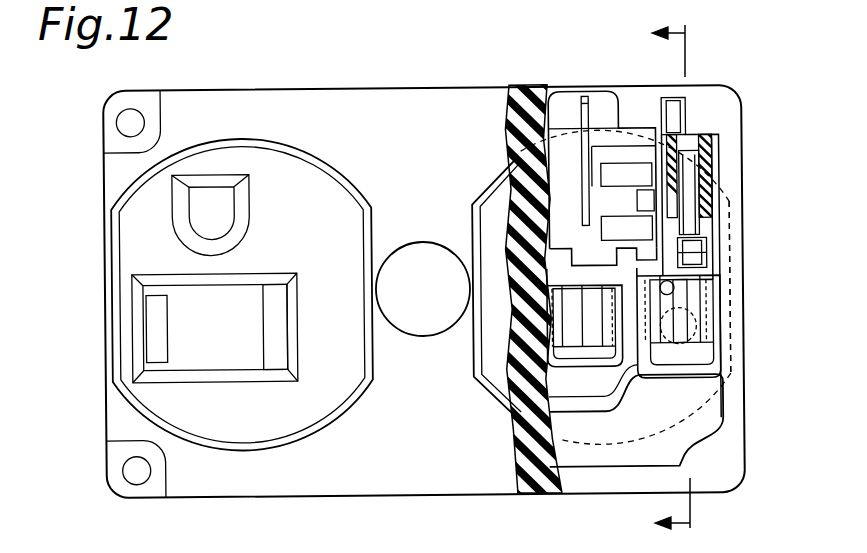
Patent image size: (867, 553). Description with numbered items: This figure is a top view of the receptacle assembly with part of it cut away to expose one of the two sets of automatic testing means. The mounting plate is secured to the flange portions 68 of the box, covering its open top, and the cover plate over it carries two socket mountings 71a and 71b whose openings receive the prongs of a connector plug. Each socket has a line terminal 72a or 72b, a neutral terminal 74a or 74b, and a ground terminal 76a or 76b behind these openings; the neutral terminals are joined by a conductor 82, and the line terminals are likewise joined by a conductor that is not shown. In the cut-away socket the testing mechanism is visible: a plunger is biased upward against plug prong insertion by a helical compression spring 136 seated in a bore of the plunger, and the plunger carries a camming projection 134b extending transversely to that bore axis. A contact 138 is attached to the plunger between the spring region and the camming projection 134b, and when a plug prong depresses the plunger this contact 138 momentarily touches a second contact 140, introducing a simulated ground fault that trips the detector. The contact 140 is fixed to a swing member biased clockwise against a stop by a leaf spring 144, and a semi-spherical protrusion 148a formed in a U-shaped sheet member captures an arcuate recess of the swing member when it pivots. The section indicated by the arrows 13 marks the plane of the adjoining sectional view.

The flange portions 68 is at (426, 482).
The socket mounting 71a is at (315, 180).
The socket mounting 71b is at (490, 195).
The line terminal 72a is at (155, 334).
The line terminal 72b is at (572, 328).
The neutral terminal 74a is at (278, 362).
The neutral terminal 74b is at (704, 322).
The ground terminal 76a is at (208, 195).
The ground terminal 76b is at (618, 178).
The conductor 82 is at (605, 412).
The camming projection 134b is at (705, 248).
The helical compression spring 136 is at (718, 360).
The contact 138 is at (712, 272).
The contact 140 is at (735, 290).
The leaf spring 144 is at (674, 112).
The semi-spherical protrusion 148a is at (727, 180).
The section line 13- 13 is at (695, 279).